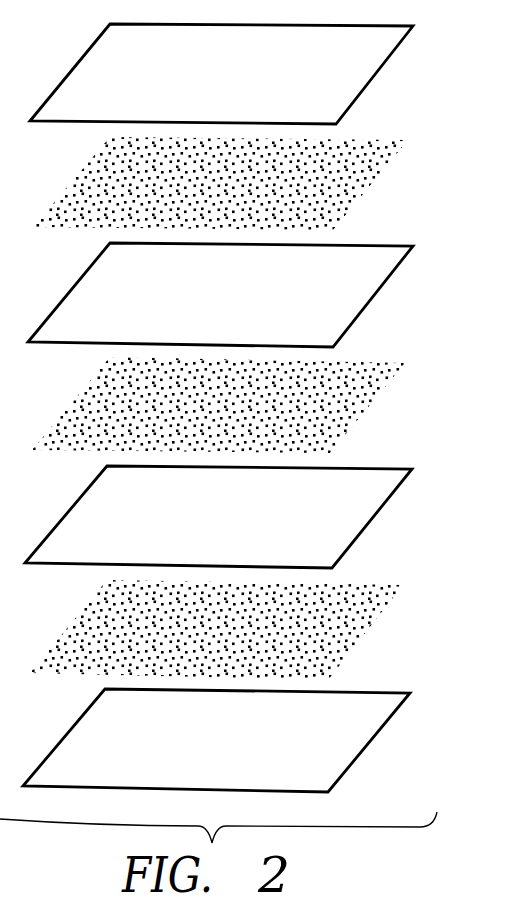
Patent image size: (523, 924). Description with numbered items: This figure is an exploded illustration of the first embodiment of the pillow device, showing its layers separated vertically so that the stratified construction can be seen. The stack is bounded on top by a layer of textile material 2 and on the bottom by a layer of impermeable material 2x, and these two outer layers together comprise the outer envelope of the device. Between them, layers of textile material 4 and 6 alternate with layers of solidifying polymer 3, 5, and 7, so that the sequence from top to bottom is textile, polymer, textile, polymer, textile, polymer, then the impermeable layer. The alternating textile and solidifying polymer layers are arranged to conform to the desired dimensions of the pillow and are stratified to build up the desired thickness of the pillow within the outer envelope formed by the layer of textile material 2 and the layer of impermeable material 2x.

The layer of textile material 2 is at (382, 72).
The layer of solidifying polymer 3 is at (378, 168).
The layer of textile material 4 is at (380, 292).
The layer of solidifying polymer 5 is at (377, 390).
The layer of textile material 6 is at (377, 515).
The layer of solidifying polymer 7 is at (373, 613).
The layer of impermeable material 2x is at (375, 738).